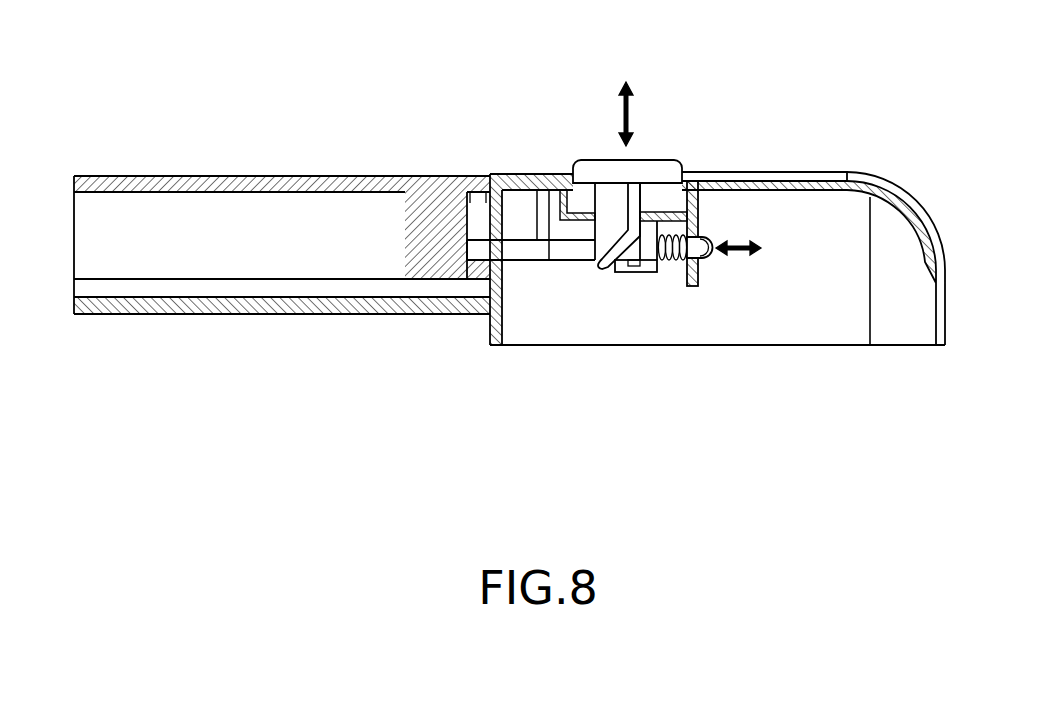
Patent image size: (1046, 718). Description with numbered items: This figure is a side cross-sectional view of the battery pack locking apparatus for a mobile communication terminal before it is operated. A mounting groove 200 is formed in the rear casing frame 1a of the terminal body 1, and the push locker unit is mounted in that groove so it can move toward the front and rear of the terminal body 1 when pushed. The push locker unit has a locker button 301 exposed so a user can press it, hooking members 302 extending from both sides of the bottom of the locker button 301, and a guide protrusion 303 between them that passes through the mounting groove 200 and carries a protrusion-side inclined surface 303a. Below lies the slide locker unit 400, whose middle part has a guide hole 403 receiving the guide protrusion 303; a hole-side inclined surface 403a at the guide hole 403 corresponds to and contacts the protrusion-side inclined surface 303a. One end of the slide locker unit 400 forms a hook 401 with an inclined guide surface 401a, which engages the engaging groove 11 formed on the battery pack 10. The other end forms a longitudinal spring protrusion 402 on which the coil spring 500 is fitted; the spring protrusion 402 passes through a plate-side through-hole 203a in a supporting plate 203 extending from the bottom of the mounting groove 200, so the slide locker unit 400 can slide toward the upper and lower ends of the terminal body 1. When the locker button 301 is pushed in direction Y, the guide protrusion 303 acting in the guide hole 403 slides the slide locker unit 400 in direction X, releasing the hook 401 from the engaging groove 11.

The terminal body 1 is at (506, 234).
The rear casing frame 1a is at (760, 172).
The battery pack 10 is at (270, 172).
The engaging groove 11 is at (467, 173).
The mounting groove 200 is at (568, 173).
The locker button 301 is at (660, 165).
The hooking member 302 is at (635, 273).
The guide protrusion 303 is at (597, 210).
The protrusion-side inclined surface 303a is at (603, 270).
The slide locker unit 400 is at (533, 267).
The hook 401 is at (480, 262).
The guide surface 401a is at (472, 250).
The spring protrusion 402 is at (712, 242).
The guide hole 403 is at (568, 260).
The hole-side inclined surface 403a is at (652, 263).
The supporting plate 203 is at (693, 287).
The plate-side through-hole 203a is at (712, 256).
The coil spring 500 is at (675, 267).